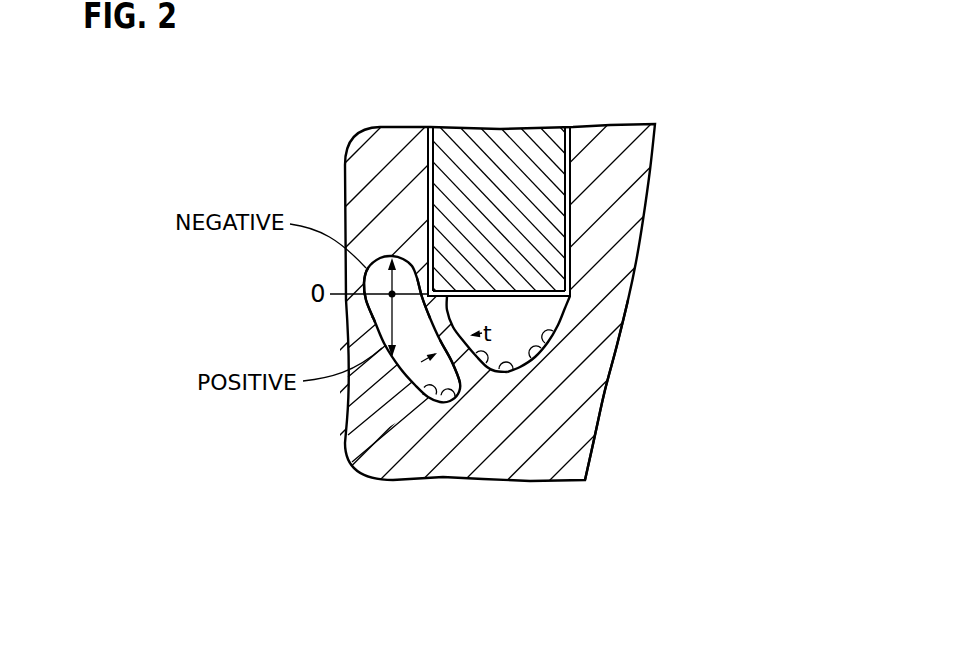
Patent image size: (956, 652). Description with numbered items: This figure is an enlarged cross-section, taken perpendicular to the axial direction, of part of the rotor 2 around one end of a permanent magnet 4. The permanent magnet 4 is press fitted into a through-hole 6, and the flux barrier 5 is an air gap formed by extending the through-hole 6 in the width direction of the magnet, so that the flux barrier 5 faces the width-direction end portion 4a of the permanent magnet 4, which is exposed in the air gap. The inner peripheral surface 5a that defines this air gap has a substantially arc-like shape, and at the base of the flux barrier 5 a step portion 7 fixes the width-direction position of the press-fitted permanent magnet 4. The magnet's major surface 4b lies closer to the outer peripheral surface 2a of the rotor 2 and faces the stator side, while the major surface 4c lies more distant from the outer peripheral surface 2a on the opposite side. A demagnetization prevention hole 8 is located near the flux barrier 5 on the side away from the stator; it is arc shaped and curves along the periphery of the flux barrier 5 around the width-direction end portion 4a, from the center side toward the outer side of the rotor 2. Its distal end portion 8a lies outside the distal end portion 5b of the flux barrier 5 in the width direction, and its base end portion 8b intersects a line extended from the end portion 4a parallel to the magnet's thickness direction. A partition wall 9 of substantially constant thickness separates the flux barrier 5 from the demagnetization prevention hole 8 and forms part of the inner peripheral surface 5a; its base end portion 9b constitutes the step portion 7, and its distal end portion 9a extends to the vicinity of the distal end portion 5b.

The rotor 2 is at (603, 427).
The outer peripheral surface 2a is at (592, 455).
The permanent magnet 4 is at (548, 172).
The width-direction end portion 4a is at (520, 295).
The major surface 4b is at (570, 217).
The major surface 4c is at (428, 200).
The flux barrier 5 is at (541, 357).
The inner peripheral surface 5a is at (548, 368).
The distal end portion 5b is at (501, 376).
The through-hole 6 is at (429, 152).
The step portion 7 is at (398, 255).
The demagnetization prevention hole 8 is at (429, 394).
The distal end portion 8a is at (435, 400).
The base end portion 8b is at (368, 286).
The partition wall 9 is at (481, 377).
The distal end portion 9a is at (463, 387).
The base end portion 9b is at (427, 308).